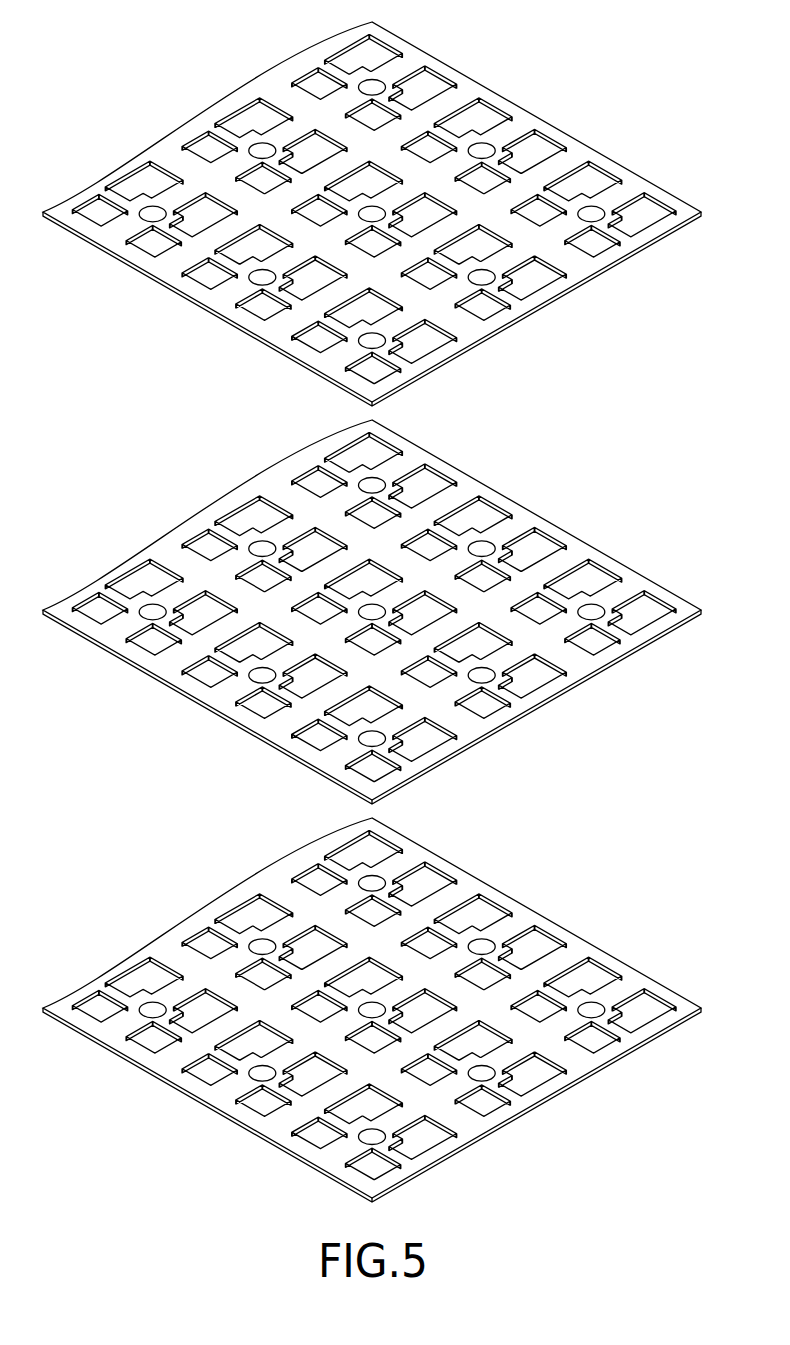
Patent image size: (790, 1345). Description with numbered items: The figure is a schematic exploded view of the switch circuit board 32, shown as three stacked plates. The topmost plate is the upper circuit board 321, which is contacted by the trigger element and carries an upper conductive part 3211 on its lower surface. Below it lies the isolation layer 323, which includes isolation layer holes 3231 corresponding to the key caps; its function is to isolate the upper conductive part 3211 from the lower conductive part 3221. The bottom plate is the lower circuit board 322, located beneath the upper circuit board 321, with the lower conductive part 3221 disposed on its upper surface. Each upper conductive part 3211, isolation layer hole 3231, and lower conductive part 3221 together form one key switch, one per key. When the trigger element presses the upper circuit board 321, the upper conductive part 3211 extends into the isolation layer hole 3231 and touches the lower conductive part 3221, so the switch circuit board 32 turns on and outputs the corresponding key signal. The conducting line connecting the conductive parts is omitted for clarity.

The switch circuit board 32 is at (188, 58).
The upper circuit board 321 is at (372, 214).
The upper conductive part 3211 is at (141, 219).
The isolation layer 323 is at (372, 612).
The isolation layer hole 3231 is at (141, 617).
The lower circuit board 322 is at (372, 1010).
The lower conductive part 3221 is at (141, 1015).